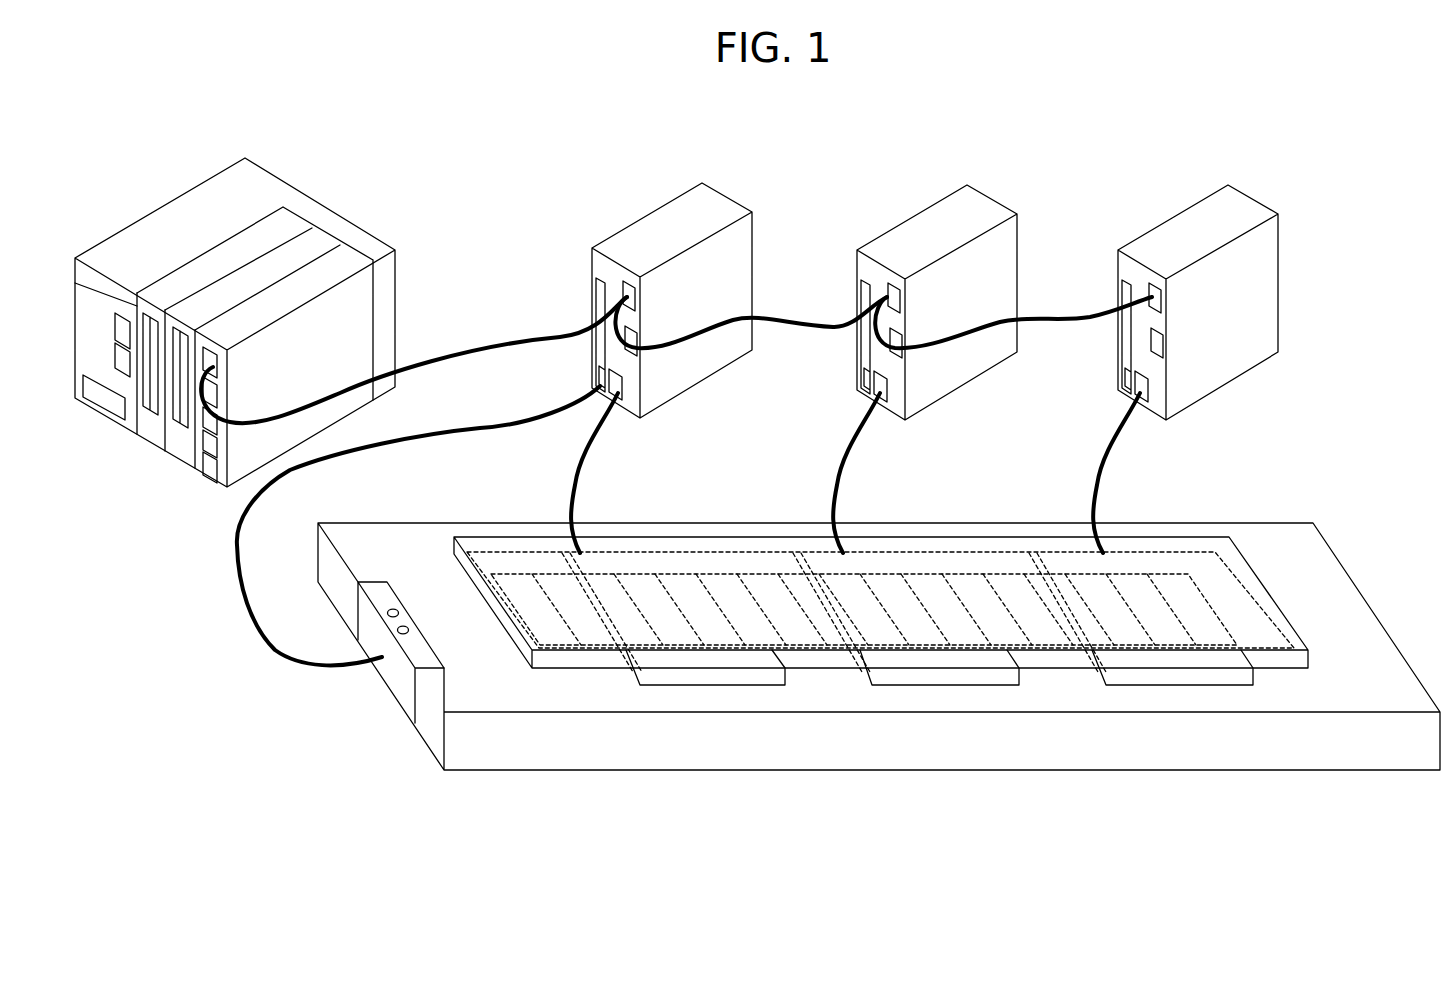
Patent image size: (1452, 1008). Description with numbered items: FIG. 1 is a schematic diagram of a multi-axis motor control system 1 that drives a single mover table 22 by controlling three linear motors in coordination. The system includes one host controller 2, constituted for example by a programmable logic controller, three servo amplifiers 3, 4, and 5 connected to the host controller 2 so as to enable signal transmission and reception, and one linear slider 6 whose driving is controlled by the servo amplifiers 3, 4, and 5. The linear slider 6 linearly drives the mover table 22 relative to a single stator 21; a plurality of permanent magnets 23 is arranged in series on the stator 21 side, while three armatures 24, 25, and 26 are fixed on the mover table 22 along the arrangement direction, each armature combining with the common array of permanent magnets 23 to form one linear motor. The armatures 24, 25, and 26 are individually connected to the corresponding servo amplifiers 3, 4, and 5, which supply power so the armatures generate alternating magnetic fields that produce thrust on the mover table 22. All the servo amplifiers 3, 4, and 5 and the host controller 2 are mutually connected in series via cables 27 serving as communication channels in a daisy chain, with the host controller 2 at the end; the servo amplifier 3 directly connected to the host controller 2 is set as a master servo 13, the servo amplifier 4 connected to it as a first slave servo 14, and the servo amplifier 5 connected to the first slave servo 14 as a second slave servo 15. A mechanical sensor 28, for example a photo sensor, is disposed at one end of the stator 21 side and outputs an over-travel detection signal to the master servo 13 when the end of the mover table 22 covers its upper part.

The multi-axis motor control system 1 is at (1343, 165).
The host controller 2 is at (198, 203).
The servo amplifier 3 is at (638, 284).
The master servo 13 is at (657, 227).
The servo amplifier 4 is at (906, 285).
The first slave servo 14 is at (920, 228).
The servo amplifier 5 is at (1181, 285).
The second slave servo 15 is at (1185, 228).
The linear slider 6 is at (1347, 570).
The stator 21 is at (510, 750).
The mover table 22 is at (1205, 556).
The permanent magnets 23 is at (522, 597).
The armature 24 is at (714, 676).
The armature 25 is at (935, 676).
The armature 26 is at (1164, 677).
The cables 27 is at (484, 332).
The mechanical sensor 28 is at (417, 648).